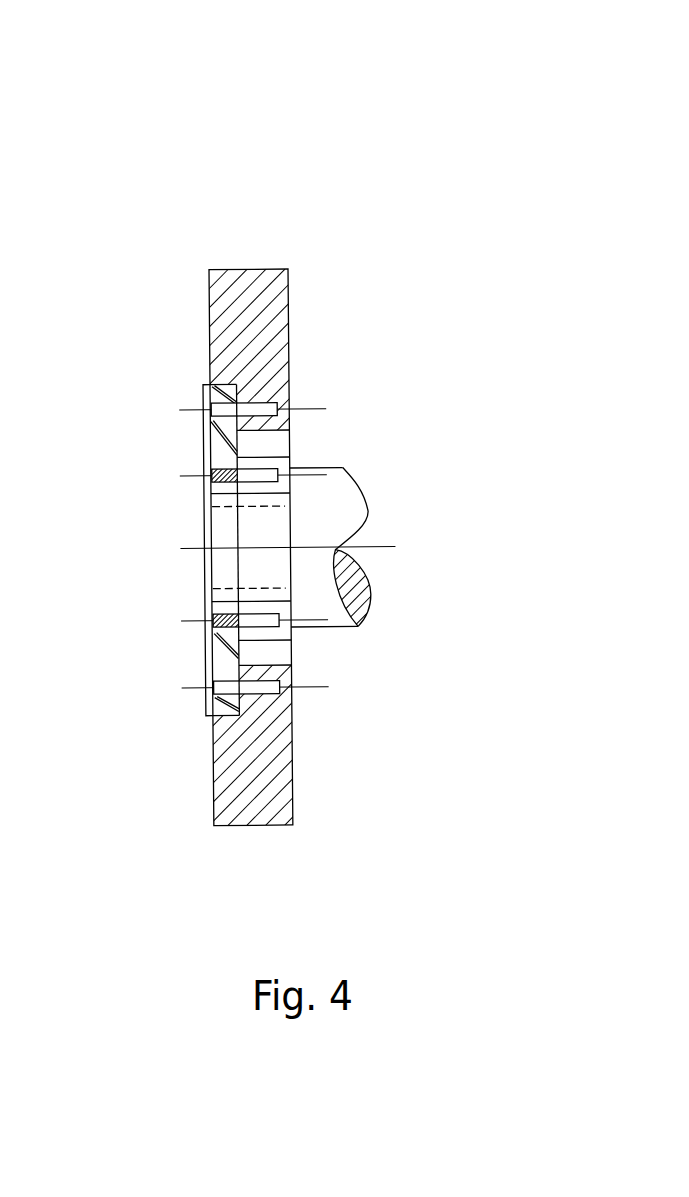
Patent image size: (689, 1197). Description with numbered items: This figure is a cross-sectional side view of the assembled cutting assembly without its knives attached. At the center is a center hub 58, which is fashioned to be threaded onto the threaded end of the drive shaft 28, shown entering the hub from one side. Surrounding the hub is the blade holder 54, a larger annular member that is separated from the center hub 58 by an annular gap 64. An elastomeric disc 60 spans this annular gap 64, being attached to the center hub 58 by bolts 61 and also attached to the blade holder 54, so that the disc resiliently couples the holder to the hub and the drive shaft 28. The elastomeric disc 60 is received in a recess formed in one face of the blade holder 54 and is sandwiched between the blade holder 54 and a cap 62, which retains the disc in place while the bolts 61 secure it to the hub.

The blade holder 54 is at (295, 785).
The elastomeric disc 60 is at (238, 381).
The cap 62 is at (206, 382).
The bolts 61 is at (289, 376).
The annular gap 64 is at (270, 445).
The center hub 58 is at (297, 483).
The drive shaft 28 is at (342, 512).